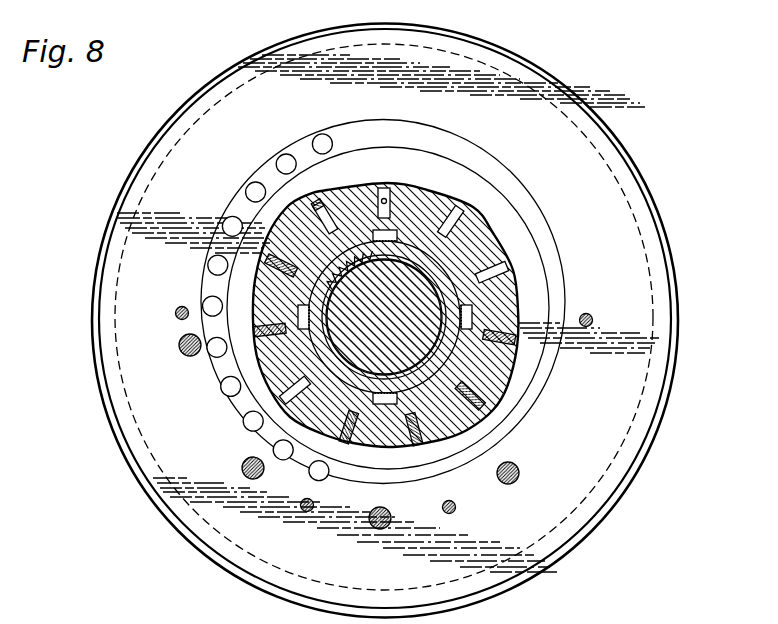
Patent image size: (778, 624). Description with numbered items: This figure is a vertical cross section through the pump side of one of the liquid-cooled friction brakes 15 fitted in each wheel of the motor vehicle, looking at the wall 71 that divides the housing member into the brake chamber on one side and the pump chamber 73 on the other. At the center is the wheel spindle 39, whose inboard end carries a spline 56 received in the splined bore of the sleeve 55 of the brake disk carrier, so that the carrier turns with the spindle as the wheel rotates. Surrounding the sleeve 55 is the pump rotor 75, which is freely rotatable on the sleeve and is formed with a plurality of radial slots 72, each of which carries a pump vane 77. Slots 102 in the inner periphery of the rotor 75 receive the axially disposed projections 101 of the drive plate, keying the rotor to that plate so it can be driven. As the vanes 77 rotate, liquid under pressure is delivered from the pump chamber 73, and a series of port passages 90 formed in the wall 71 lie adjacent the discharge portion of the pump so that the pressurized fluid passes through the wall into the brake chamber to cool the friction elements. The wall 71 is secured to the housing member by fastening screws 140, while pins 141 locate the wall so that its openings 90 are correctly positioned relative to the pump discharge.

The friction brake 15 is at (633, 155).
The wheel spindle 39 is at (397, 262).
The sleeve 55 is at (370, 378).
The spline 56 is at (384, 317).
The wall 71 is at (585, 400).
The radial slots 72 is at (312, 186).
The pump chamber 73 is at (462, 142).
The pump rotor 75 is at (530, 236).
The pump vane 77 is at (254, 330).
The port passages 90 is at (322, 143).
The axially disposed projections 101 is at (488, 282).
The slots 102 is at (470, 320).
The fastening screws 140 is at (183, 305).
The pins 141 is at (178, 345).